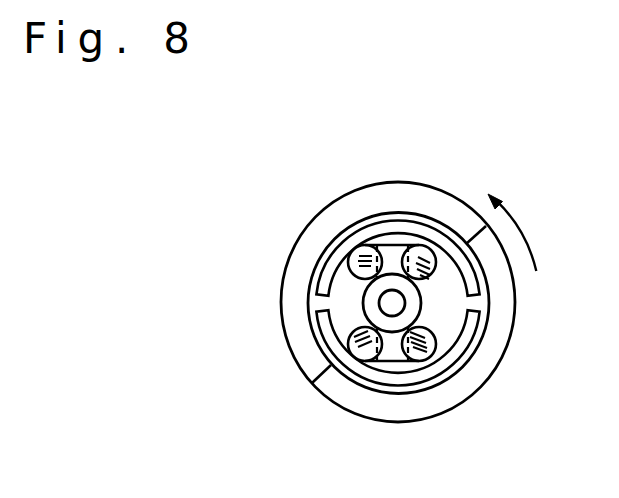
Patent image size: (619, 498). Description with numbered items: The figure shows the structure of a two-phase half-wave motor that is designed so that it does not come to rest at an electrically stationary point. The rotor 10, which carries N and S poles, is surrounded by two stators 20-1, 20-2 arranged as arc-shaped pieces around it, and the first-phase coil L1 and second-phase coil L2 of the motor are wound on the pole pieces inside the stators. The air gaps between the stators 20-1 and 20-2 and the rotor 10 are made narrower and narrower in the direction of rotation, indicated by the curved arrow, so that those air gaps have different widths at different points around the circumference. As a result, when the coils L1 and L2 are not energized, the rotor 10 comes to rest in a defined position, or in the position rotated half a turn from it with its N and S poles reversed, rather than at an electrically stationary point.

The rotor 10 is at (515, 323).
The stator 20-1 is at (388, 240).
The stator 20-2 is at (420, 372).
The first-phase coil L1 is at (353, 271).
The second-phase coil L2 is at (367, 343).